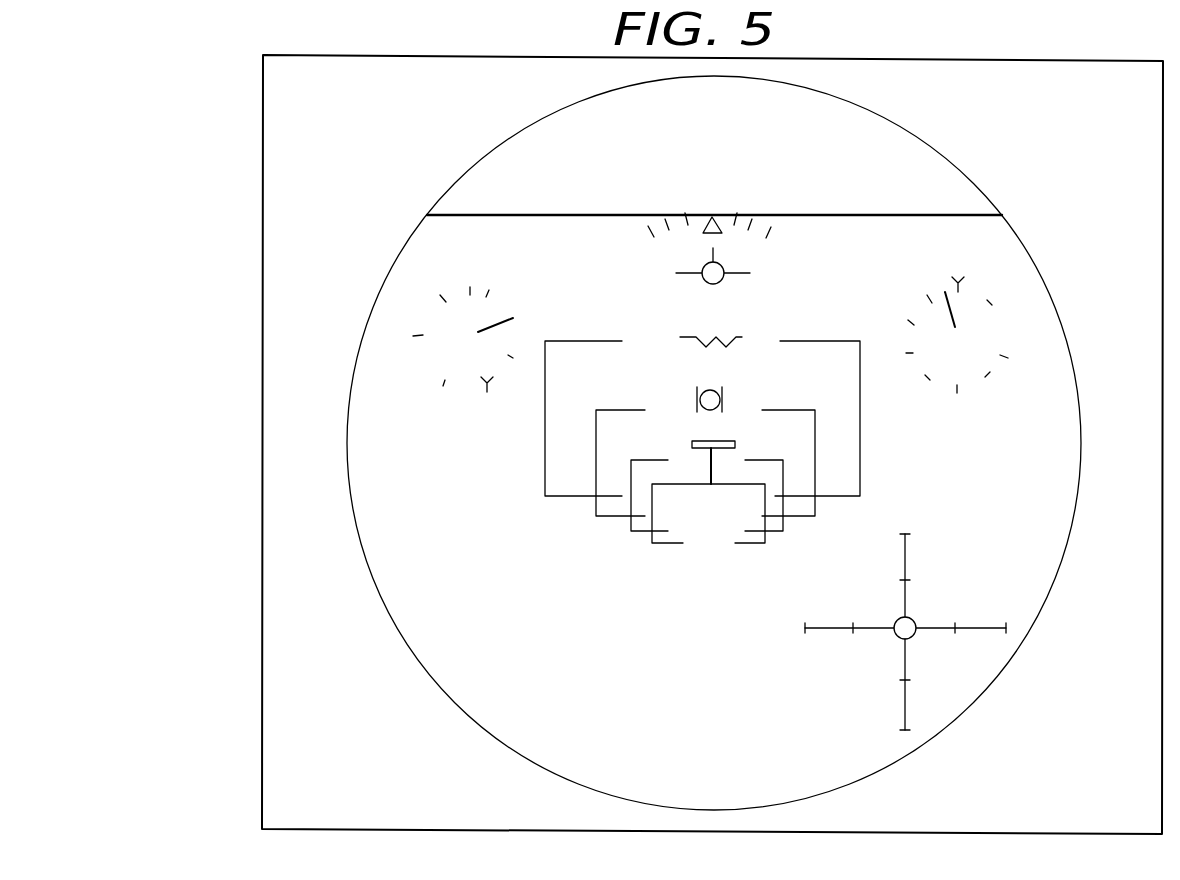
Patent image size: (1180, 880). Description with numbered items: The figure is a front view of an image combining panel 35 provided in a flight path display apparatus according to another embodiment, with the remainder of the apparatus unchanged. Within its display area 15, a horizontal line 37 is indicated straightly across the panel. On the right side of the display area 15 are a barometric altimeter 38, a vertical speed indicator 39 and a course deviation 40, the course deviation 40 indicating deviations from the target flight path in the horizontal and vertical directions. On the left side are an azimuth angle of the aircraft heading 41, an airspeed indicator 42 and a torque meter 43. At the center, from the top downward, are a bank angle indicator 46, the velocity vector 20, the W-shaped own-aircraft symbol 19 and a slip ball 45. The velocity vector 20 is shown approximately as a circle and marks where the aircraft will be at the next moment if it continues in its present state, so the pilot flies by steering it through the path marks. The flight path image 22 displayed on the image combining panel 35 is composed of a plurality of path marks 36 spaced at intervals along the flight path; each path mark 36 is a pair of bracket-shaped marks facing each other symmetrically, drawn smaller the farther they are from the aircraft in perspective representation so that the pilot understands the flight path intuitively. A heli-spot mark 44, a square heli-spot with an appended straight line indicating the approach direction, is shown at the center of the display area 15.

The image combining panel 35 is at (262, 176).
The display area 15 is at (405, 246).
The horizontal line 37 is at (960, 215).
The azimuth angle of the aircraft heading 41 is at (428, 222).
The bank angle indicator 46 is at (668, 222).
The velocity vector 20 is at (728, 270).
The own-aircraft symbol 19 is at (730, 333).
The slip ball 45 is at (704, 392).
The flight path image 22 is at (536, 496).
The path mark 36 is at (607, 518).
The heli-spot mark 44 is at (710, 466).
The airspeed indicator 42 is at (406, 338).
The torque meter 43 is at (455, 452).
The barometric altimeter 38 is at (1006, 329).
The vertical speed indicator 39 is at (985, 456).
The course deviation 40 is at (986, 636).